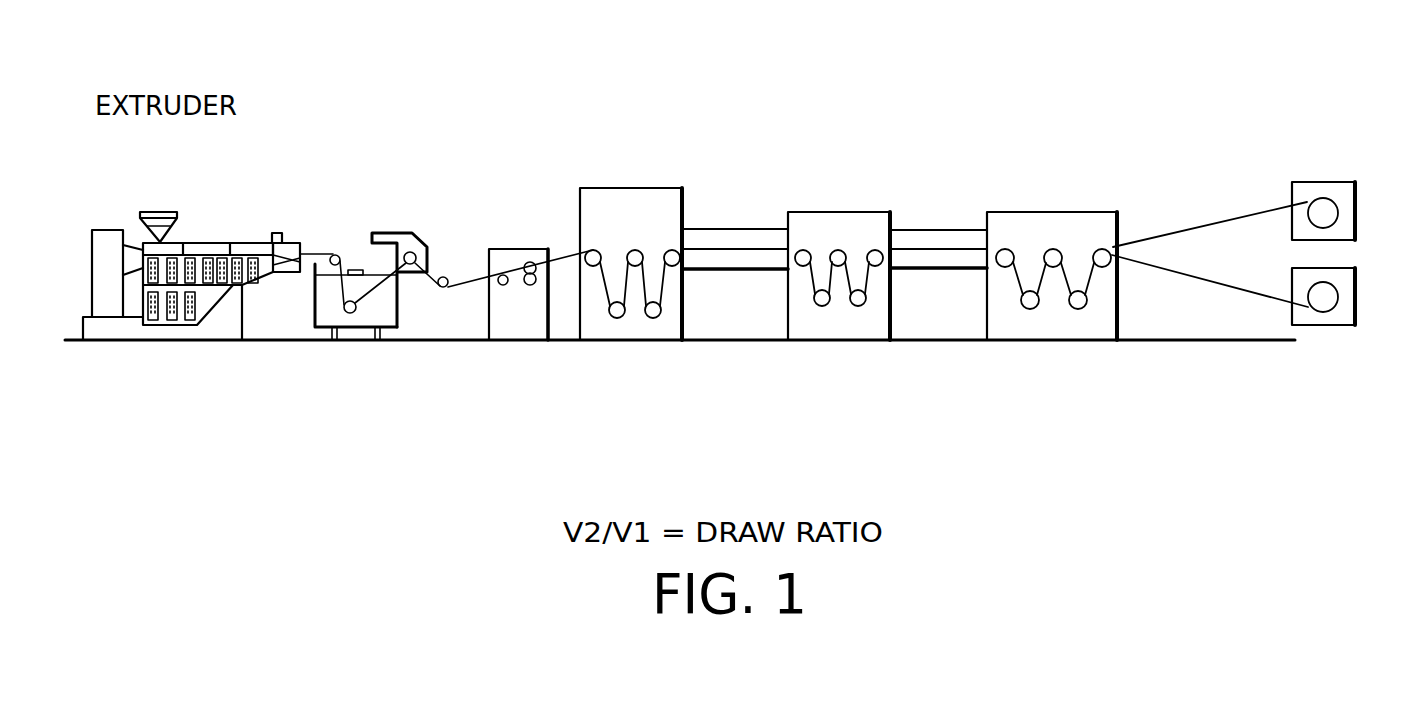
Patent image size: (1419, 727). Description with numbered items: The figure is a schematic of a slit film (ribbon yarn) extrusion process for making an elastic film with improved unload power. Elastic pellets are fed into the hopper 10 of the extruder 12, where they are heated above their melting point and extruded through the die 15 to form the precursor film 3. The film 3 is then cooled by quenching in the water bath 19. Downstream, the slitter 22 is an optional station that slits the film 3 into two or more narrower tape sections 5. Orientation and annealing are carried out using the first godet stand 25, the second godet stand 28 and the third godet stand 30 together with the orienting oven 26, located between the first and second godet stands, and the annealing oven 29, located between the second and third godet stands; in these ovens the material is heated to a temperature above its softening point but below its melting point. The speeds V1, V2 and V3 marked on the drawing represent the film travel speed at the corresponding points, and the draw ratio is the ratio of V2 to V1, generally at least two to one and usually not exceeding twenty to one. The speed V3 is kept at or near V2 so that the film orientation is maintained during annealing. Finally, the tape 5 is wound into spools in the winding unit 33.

The hopper 10 is at (163, 220).
The extruder 12 is at (213, 245).
The die 15 is at (293, 247).
The water bath 19 is at (315, 302).
The film 3 is at (373, 297).
The film travel speed V1 is at (410, 225).
The tape section 5 is at (468, 278).
The slitter 22 is at (527, 342).
The first godet stand 25 is at (630, 185).
The film travel speed V2 is at (607, 183).
The orienting oven 26 is at (735, 271).
The second godet stand 28 is at (838, 210).
The annealing oven 29 is at (952, 270).
The third godet stand 30 is at (1058, 210).
The film travel speed V3 is at (1105, 205).
The winding unit 33 is at (1323, 182).